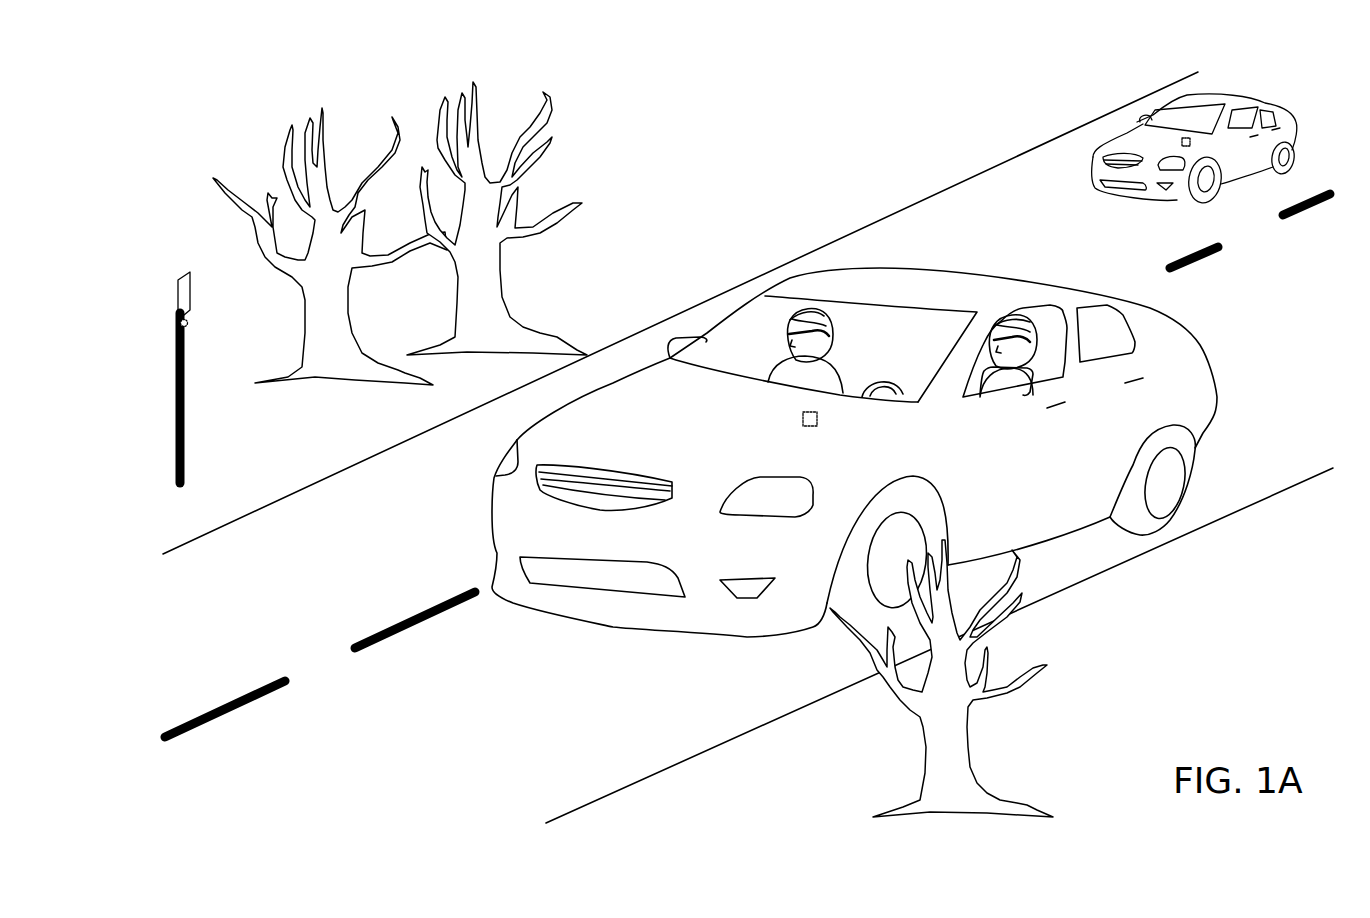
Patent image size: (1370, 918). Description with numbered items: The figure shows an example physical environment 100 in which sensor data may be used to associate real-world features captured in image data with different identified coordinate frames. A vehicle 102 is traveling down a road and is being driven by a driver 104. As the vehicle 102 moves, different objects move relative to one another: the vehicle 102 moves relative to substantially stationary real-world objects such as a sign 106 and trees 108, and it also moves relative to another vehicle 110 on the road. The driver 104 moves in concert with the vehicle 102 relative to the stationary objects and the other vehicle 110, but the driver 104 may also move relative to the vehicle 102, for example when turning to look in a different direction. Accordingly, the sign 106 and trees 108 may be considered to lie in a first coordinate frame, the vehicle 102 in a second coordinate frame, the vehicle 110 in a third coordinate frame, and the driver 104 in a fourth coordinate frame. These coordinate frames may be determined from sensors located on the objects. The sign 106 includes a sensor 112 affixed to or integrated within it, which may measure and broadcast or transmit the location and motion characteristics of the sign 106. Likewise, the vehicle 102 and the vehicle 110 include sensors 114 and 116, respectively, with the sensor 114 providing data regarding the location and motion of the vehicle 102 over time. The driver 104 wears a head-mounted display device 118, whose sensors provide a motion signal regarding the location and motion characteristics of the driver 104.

The physical environment 100 is at (729, 128).
The vehicle 102 is at (892, 268).
The driver 104 is at (1023, 317).
The sign 106 is at (187, 273).
The trees 108 is at (963, 771).
The vehicle 110 is at (1207, 96).
The sensor 112 is at (185, 326).
The sensor 114 is at (817, 419).
The sensor 116 is at (1181, 142).
The head-mounted display device 118 is at (1028, 345).